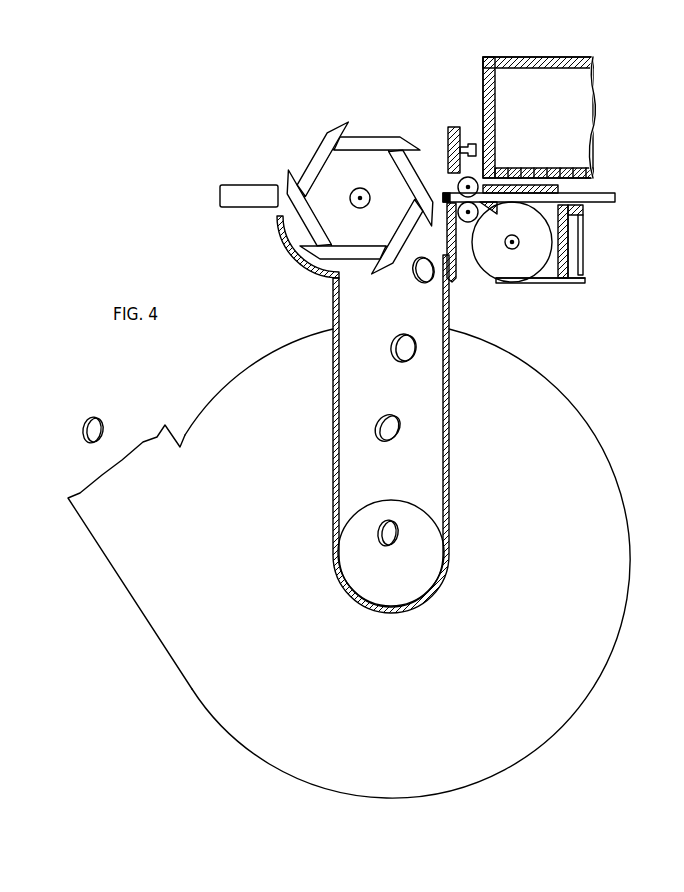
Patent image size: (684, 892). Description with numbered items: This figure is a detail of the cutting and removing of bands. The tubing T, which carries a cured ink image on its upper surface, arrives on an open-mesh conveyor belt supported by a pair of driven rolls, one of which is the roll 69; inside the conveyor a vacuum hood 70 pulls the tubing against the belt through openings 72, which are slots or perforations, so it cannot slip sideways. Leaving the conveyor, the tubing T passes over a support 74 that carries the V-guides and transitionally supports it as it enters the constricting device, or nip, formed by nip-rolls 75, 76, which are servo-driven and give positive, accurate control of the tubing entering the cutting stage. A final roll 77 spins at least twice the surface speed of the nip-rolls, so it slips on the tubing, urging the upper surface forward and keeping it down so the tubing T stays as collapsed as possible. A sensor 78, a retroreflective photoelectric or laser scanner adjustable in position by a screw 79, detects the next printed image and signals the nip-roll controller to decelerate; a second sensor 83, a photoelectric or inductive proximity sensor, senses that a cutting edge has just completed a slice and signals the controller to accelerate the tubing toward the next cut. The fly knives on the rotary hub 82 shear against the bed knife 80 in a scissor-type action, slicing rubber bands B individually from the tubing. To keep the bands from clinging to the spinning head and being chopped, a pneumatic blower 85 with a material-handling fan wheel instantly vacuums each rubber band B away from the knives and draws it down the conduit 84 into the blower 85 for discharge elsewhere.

The roll 69 is at (524, 268).
The vacuum hood 70 is at (566, 283).
The openings 72 is at (583, 230).
The support 74 is at (486, 208).
The nip-roll 75 is at (474, 180).
The nip-roll 76 is at (466, 226).
The final roll 77 is at (445, 193).
The sensor 78 is at (448, 127).
The screw 79 is at (470, 144).
The bed knife 80 is at (456, 266).
The hub 82 is at (333, 173).
The sensor 83 is at (242, 185).
The conduit 84 is at (452, 326).
The pneumatic blower 85 is at (558, 410).
The rubber band B is at (419, 283).
The tubing T is at (616, 196).